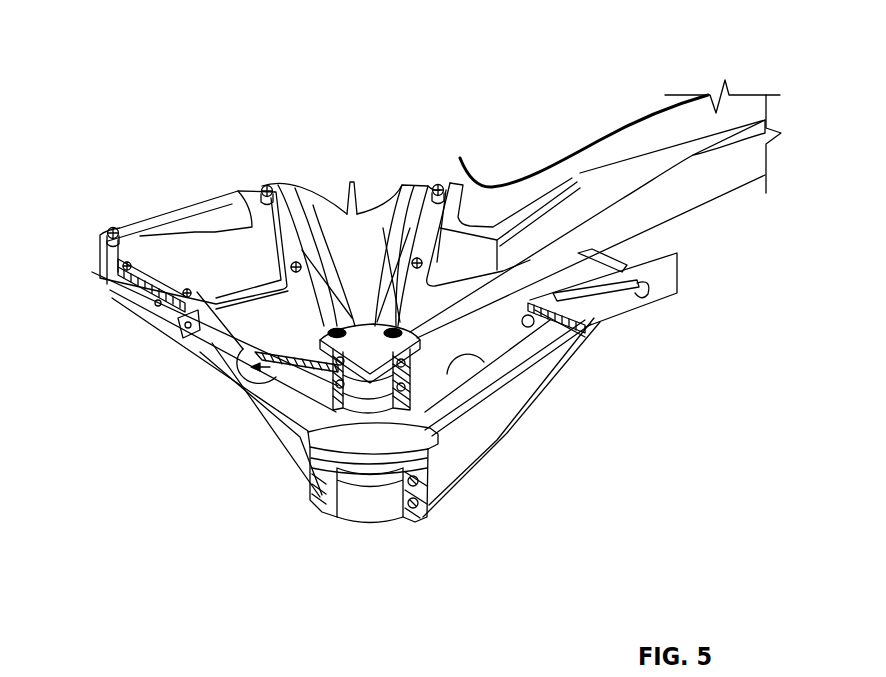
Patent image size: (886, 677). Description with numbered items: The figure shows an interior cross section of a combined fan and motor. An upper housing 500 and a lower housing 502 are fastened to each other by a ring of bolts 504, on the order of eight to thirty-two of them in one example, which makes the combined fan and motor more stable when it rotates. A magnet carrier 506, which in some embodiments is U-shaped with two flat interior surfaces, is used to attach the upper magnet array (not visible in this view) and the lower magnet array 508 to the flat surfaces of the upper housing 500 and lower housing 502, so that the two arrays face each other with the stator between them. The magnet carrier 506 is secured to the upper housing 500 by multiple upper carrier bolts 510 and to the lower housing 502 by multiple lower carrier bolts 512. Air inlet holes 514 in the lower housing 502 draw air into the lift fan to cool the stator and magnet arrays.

The upper housing 500 is at (465, 185).
The lower housing 502 is at (292, 458).
The ring of bolts 504 is at (438, 184).
The magnet carrier 506 is at (678, 256).
The lower magnet array 508 is at (121, 289).
The upper carrier bolts 510 is at (158, 306).
The lower carrier bolts 512 is at (536, 321).
The air inlet holes 514 is at (468, 367).